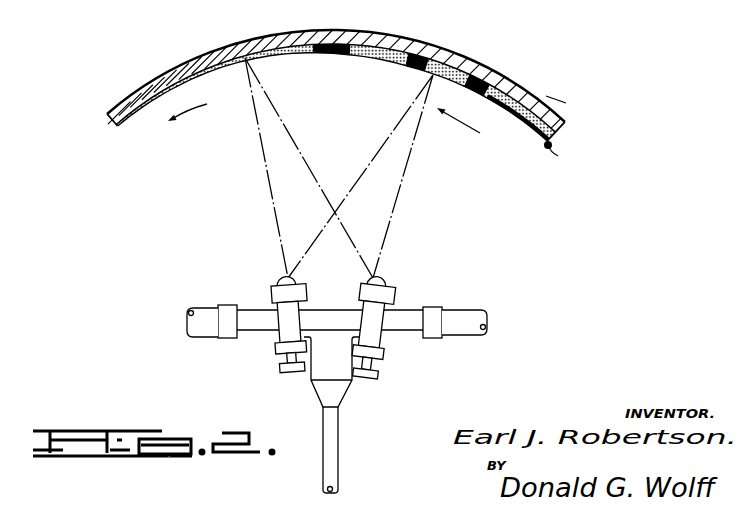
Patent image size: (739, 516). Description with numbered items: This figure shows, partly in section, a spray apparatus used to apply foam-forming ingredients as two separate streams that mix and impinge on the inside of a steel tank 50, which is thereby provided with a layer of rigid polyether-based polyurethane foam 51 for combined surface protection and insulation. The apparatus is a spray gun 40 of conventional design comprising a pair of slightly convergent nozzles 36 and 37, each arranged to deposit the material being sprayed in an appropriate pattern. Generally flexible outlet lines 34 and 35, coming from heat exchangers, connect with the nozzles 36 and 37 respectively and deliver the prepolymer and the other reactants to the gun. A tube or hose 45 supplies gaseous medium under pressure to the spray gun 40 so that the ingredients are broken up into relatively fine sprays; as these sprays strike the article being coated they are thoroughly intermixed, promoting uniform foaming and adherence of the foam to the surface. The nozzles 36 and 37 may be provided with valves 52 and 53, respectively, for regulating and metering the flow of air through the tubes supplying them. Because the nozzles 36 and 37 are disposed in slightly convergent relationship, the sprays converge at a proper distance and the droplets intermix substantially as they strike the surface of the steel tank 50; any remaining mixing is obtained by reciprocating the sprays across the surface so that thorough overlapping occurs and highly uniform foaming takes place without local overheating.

The outlet line 34 is at (190, 320).
The outlet line 35 is at (455, 312).
The nozzle 36 is at (286, 281).
The nozzle 37 is at (385, 282).
The spray gun 40 is at (342, 372).
The tube or hose 45 is at (333, 437).
The steel tank 50 is at (522, 86).
The rigid polyether-based polyurethane foam 51 is at (530, 130).
The valve 52 is at (276, 358).
The valve 53 is at (392, 365).